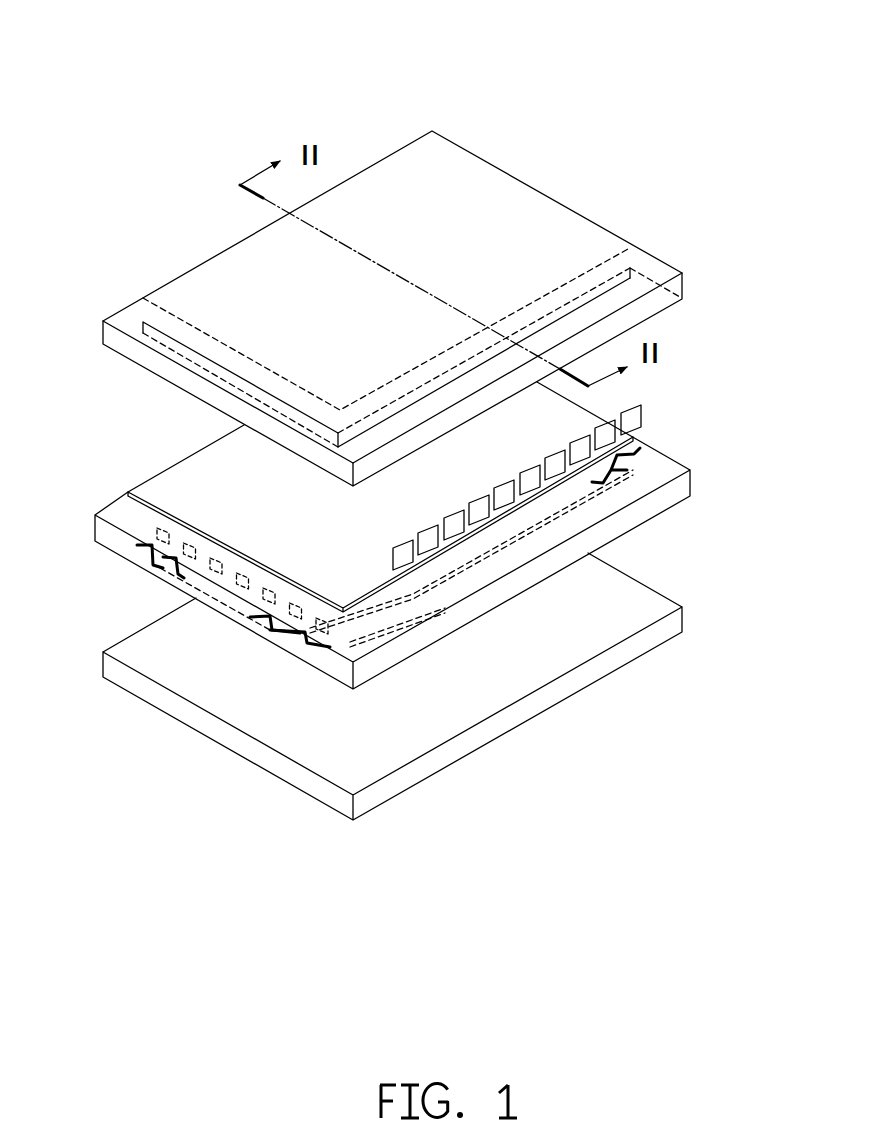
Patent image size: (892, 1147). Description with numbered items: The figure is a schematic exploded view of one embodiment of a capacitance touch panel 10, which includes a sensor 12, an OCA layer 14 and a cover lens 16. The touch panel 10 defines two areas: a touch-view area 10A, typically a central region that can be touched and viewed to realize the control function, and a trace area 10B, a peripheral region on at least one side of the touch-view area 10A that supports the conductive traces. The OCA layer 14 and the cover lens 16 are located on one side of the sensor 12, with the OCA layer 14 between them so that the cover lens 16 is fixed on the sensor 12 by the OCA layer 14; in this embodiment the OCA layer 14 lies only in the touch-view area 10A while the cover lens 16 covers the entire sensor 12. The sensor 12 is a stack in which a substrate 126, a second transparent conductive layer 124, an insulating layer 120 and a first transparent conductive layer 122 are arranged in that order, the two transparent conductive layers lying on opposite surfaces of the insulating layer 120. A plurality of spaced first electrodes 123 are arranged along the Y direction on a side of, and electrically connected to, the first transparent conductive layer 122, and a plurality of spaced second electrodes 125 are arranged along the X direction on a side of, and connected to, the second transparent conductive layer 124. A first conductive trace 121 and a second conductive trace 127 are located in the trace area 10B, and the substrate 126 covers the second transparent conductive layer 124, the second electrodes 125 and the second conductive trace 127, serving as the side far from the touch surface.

The capacitance touch panel 10 is at (383, 27).
The touch-view area 10A is at (497, 210).
The trace area 10B is at (638, 287).
The cover lens 16 is at (120, 320).
The OCA layer 14 is at (180, 343).
The sensor 12 is at (780, 343).
The insulating layer 120 is at (675, 488).
The first transparent conductive layer 122 is at (577, 437).
The first electrodes 123 is at (632, 430).
The first conductive trace 121 is at (635, 462).
The second electrodes 125 is at (300, 622).
The second transparent conductive layer 124 is at (292, 632).
The second conductive trace 127 is at (270, 632).
The substrate 126 is at (665, 625).